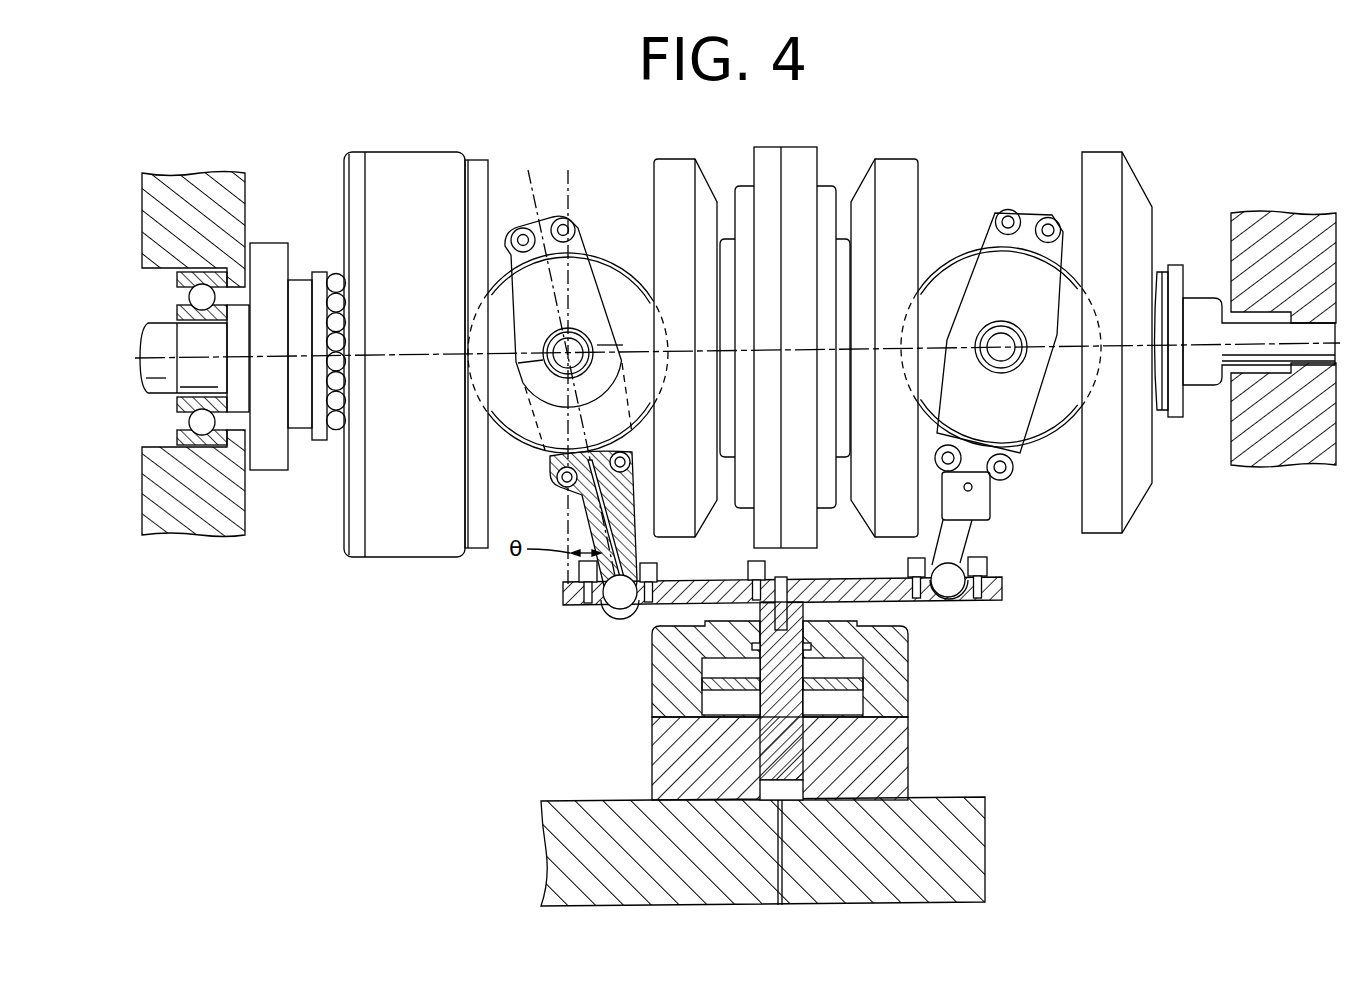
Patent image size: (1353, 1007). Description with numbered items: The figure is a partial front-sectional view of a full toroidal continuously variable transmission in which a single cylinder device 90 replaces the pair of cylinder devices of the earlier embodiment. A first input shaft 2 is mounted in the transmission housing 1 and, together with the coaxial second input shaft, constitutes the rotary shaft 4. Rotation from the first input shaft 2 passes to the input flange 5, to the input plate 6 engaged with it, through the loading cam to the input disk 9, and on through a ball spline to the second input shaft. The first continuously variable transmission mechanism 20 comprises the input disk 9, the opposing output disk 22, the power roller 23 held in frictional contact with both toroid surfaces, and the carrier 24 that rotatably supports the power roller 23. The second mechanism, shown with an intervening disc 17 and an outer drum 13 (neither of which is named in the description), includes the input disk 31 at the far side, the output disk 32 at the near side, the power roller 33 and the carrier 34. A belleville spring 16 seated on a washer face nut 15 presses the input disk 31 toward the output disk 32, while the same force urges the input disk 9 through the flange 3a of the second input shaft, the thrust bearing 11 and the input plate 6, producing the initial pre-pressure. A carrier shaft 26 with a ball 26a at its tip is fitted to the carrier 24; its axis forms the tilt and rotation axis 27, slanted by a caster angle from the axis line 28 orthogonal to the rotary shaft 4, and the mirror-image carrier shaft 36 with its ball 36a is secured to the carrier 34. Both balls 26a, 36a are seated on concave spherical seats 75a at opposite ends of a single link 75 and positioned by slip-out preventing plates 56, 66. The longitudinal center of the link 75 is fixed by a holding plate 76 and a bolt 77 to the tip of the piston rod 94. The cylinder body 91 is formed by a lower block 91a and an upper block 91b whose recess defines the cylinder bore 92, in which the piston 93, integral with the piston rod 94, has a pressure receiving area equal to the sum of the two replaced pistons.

The transmission housing 1 is at (202, 183).
The first input shaft 2 is at (185, 348).
The flange 3a is at (303, 430).
The rotary shaft 4 is at (395, 356).
The input flange 5 is at (276, 253).
The input plate 6 is at (354, 160).
The input disk 9 is at (483, 165).
The thrust bearing 11 is at (330, 283).
The drum 13 is at (417, 165).
The washer face nut 15 is at (1200, 297).
The belleville spring 16 is at (1165, 268).
The intermediate disc 17 is at (797, 145).
The first continuously variable transmission mechanism 20 is at (582, 165).
The output disk 22 is at (682, 165).
The power roller 23 is at (612, 258).
The carrier 24 is at (515, 258).
The carrier shaft 26 is at (572, 523).
The ball 26a is at (600, 607).
The tilt and rotation axis 27 is at (545, 198).
The axis line orthogonal to the rotary shaft 28 is at (570, 222).
The input disk 31 is at (1098, 150).
The output disk 32 is at (893, 160).
The power roller 33 is at (958, 252).
The carrier 34 is at (1017, 255).
The carrier shaft 36 is at (960, 528).
The ball 36a is at (965, 598).
The slip-out preventing plate 56 is at (660, 580).
The slip-out preventing plate 66 is at (992, 574).
The link 75 is at (866, 590).
The concave spherical seat 75a is at (618, 608).
The holding plate 76 is at (758, 577).
The bolt 77 is at (792, 582).
The cylinder device 90 is at (850, 701).
The cylinder body 91 is at (905, 691).
The lower block 91a is at (660, 769).
The upper block 91b is at (660, 713).
The cylinder bore 92 is at (705, 664).
The piston 93 is at (884, 679).
The piston rod 94 is at (790, 750).